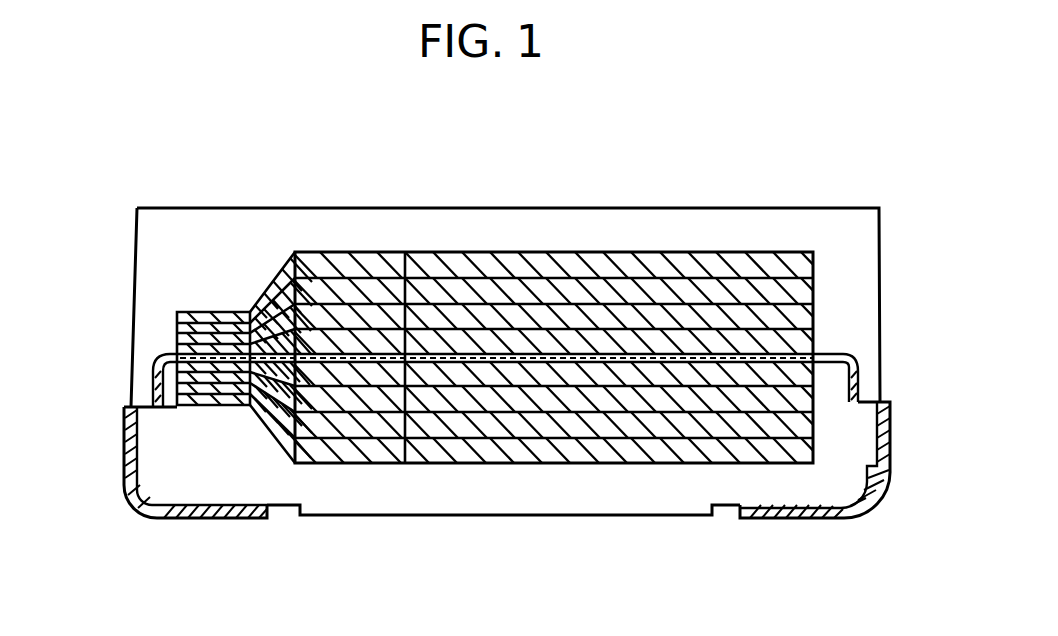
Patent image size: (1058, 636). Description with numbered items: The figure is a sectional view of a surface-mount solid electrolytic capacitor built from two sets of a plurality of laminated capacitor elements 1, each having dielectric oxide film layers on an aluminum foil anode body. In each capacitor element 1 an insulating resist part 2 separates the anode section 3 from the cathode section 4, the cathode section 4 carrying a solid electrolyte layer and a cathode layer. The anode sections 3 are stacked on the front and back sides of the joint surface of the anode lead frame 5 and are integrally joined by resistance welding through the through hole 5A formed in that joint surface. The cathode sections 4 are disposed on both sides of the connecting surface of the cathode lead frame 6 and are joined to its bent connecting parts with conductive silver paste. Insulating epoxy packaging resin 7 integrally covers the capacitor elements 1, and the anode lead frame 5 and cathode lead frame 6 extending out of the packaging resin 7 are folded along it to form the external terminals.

The capacitor element 1 is at (760, 252).
The insulating resist part 2 is at (345, 252).
The anode section 3 is at (189, 325).
The cathode section 4 is at (446, 264).
The anode lead frame 5 is at (122, 448).
The through hole 5A is at (215, 350).
The cathode lead frame 6 is at (889, 455).
The packaging resin 7 is at (630, 222).